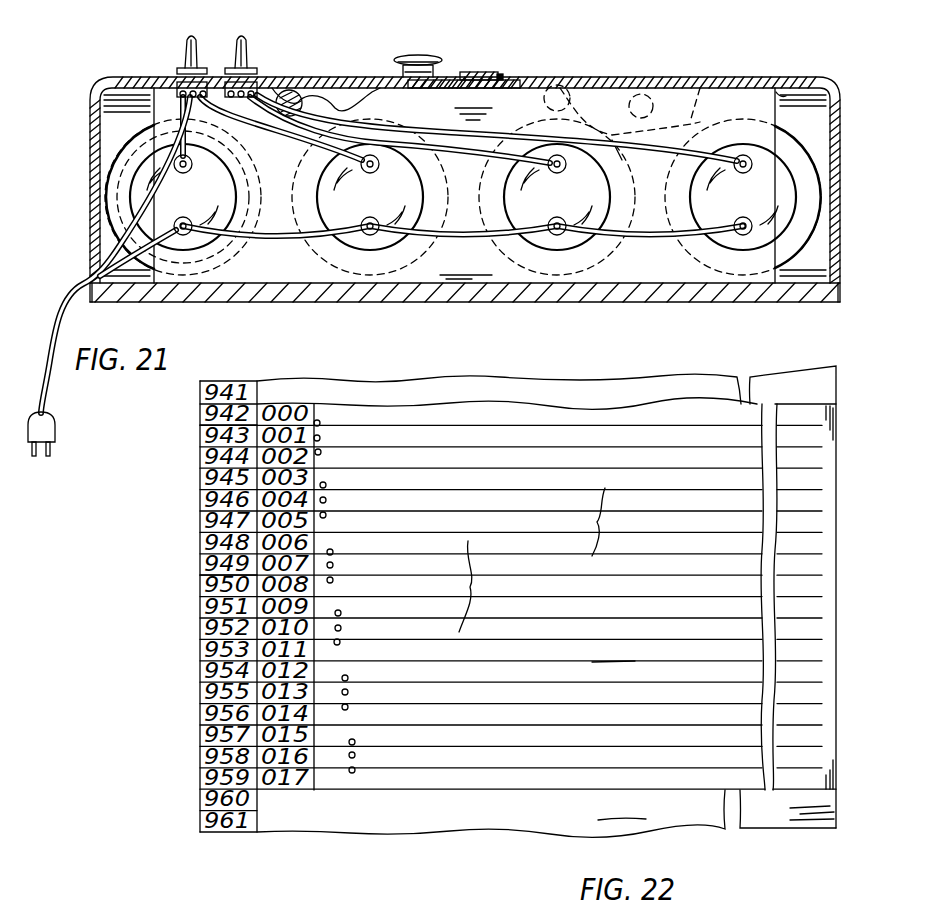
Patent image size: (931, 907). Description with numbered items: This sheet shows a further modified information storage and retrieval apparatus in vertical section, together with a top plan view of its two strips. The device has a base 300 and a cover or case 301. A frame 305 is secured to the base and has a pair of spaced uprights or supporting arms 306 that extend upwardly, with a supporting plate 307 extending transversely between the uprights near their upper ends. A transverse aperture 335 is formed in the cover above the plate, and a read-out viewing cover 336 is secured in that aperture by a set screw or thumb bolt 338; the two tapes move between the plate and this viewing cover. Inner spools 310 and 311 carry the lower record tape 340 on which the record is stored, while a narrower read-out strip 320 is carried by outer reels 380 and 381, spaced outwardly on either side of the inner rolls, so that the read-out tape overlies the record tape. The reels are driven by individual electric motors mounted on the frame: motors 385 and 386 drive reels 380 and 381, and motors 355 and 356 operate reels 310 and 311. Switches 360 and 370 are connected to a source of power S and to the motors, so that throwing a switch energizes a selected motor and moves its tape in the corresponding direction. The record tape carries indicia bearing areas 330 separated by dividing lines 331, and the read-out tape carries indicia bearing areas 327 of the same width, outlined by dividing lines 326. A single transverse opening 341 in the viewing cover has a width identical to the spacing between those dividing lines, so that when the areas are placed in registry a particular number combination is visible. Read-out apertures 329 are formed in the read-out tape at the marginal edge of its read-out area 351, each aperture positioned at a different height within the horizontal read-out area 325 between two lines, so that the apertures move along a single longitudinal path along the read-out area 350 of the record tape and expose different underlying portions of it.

In FIG. 21, the base 300 is at (592, 290).
In FIG. 21, the cover or case 301 is at (836, 151).
In FIG. 21, the frame 305 is at (760, 100).
In FIG. 21, the uprights or supporting arms 306 is at (780, 86).
In FIG. 21, the supporting member or plate 307 is at (513, 84).
In FIG. 21, the spool 310 is at (318, 262).
In FIG. 21, the spool 311 is at (620, 268).
In FIG. 21, the read-out strip 320 is at (318, 88).
In FIG. 22, the horizontal read-out area 325 is at (483, 586).
In FIG. 22, the dividing lines 326 is at (616, 522).
In FIG. 22, the indicia bearing areas 327 is at (317, 543).
In FIG. 22, the read-out apertures 329 is at (323, 454).
In FIG. 22, the indicia bearing areas 330 is at (207, 520).
In FIG. 22, the dividing lines 331 is at (207, 607).
In FIG. 21, the transverse aperture 335 is at (499, 77).
In FIG. 21, the read-out viewing cover 336 is at (446, 78).
In FIG. 21, the set screw or thumb bolt 338 is at (424, 58).
In FIG. 21, the record tape or strip 340 is at (592, 78).
In FIG. 22, the record tape or strip 340 is at (555, 816).
In FIG. 21, the transverse aperture or opening 341 is at (468, 78).
In FIG. 22, the read-out area 350 is at (622, 807).
In FIG. 22, the read-out area 351 is at (613, 650).
In FIG. 21, the motor 355 is at (372, 237).
In FIG. 21, the motor 356 is at (556, 237).
In FIG. 21, the single pole double throw switch 360 is at (179, 67).
In FIG. 21, the switch 370 is at (257, 67).
In FIG. 21, the spool or reel 380 is at (112, 186).
In FIG. 21, the spool or reel 381 is at (810, 177).
In FIG. 21, the motor 385 is at (136, 208).
In FIG. 21, the motor 386 is at (786, 195).
In FIG. 21, the source of power S is at (57, 432).